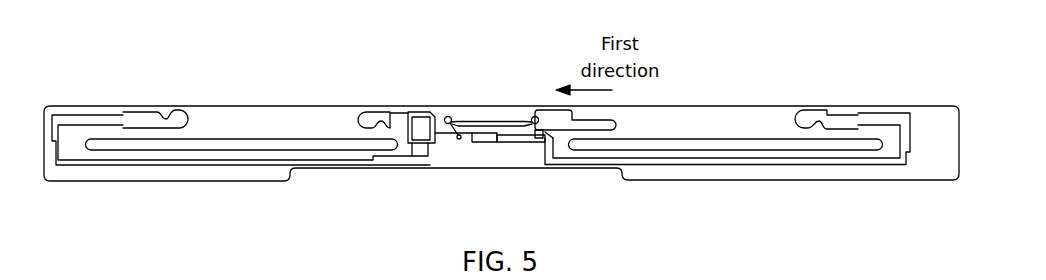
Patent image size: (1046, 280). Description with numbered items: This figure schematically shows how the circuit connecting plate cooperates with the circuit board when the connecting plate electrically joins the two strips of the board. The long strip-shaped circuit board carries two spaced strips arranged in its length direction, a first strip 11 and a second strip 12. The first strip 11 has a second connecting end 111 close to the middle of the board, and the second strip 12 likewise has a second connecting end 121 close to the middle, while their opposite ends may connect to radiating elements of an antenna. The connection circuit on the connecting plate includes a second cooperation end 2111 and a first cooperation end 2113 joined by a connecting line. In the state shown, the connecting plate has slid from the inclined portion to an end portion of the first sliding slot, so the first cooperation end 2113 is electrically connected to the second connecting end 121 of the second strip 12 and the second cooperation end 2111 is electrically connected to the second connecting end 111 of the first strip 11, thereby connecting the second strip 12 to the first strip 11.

The first strip 11 is at (174, 114).
The second strip 12 is at (831, 121).
The second connecting end 111 is at (417, 147).
The second connecting end 121 is at (523, 139).
The second cooperation end 2111 is at (422, 122).
The first cooperation end 2113 is at (483, 133).